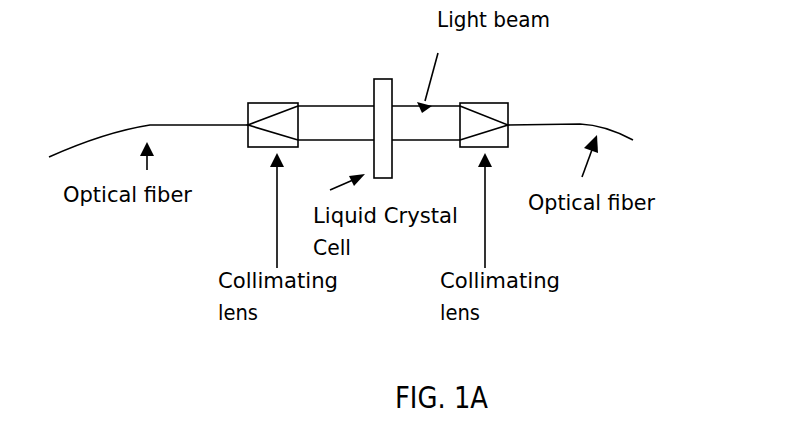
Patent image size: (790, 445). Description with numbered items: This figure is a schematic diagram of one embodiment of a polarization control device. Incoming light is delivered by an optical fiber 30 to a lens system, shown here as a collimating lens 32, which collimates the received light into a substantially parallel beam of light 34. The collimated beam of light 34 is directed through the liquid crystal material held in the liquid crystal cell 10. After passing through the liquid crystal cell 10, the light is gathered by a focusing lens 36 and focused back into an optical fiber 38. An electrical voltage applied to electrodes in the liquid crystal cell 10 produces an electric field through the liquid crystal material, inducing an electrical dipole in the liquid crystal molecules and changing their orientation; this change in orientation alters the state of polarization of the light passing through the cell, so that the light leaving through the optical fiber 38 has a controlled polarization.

The optical fiber 30 is at (162, 124).
The collimating lens 32 is at (267, 103).
The beam of light 34 is at (330, 106).
The liquid crystal cell 10 is at (383, 79).
The focusing lens 36 is at (480, 103).
The optical fiber 38 is at (605, 127).